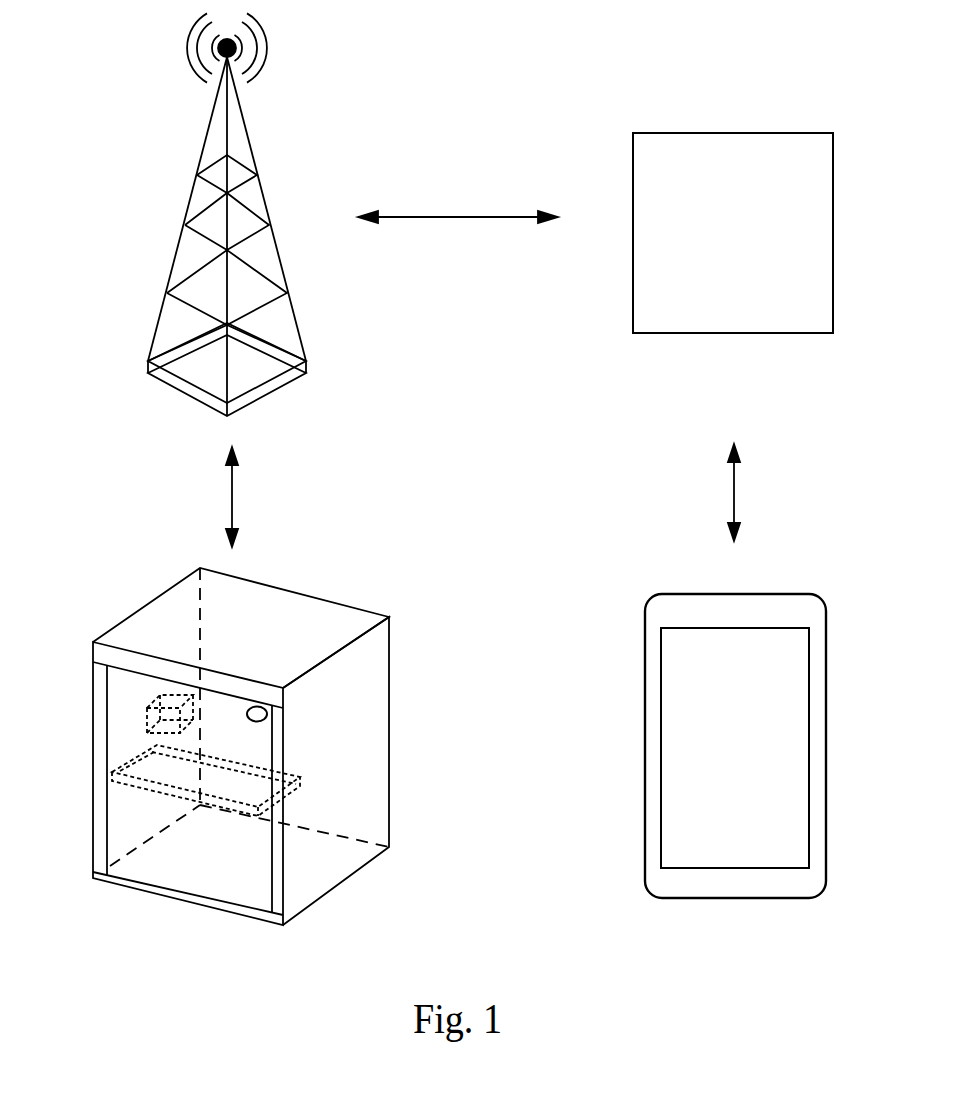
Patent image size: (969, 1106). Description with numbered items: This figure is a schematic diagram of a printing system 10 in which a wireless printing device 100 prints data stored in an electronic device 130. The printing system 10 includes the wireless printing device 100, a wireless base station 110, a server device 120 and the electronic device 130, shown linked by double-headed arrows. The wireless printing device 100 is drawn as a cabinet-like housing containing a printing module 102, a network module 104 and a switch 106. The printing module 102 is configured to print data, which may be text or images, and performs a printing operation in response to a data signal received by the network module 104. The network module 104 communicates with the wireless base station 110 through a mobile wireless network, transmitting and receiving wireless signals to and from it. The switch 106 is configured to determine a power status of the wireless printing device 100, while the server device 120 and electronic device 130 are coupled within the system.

The printing system 10 is at (496, 28).
The wireless printing device 100 is at (393, 742).
The printing module 102 is at (262, 805).
The network module 104 is at (147, 717).
The switch 106 is at (272, 712).
The wireless base station 110 is at (257, 147).
The server device 120 is at (738, 130).
The electronic device 130 is at (641, 616).